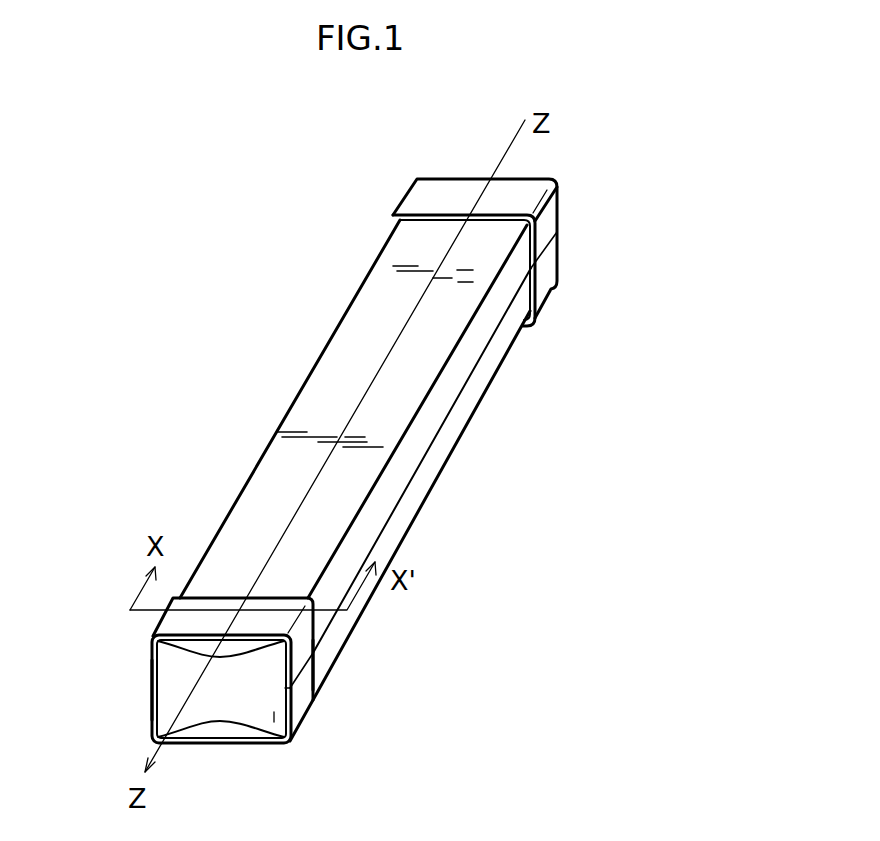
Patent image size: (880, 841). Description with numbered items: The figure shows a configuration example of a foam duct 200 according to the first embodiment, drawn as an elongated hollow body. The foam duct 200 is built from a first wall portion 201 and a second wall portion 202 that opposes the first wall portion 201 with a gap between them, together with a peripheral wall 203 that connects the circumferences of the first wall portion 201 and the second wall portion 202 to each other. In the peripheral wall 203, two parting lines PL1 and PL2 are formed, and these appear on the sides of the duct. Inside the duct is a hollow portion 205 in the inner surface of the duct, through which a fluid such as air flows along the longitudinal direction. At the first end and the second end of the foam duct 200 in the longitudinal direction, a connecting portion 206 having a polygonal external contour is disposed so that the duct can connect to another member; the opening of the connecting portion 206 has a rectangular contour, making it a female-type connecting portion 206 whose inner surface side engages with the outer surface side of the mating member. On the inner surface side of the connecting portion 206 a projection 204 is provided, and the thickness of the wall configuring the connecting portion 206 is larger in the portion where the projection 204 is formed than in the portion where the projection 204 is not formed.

The foam duct 200 is at (606, 361).
The first wall portion 201 is at (375, 325).
The second wall portion 202 is at (357, 617).
The peripheral wall 203 is at (433, 463).
The projection 204 is at (232, 650).
The hollow portion 205 is at (272, 714).
The connecting portion 206 is at (513, 192).
The parting line PL1 is at (153, 690).
The parting line PL2 is at (308, 665).